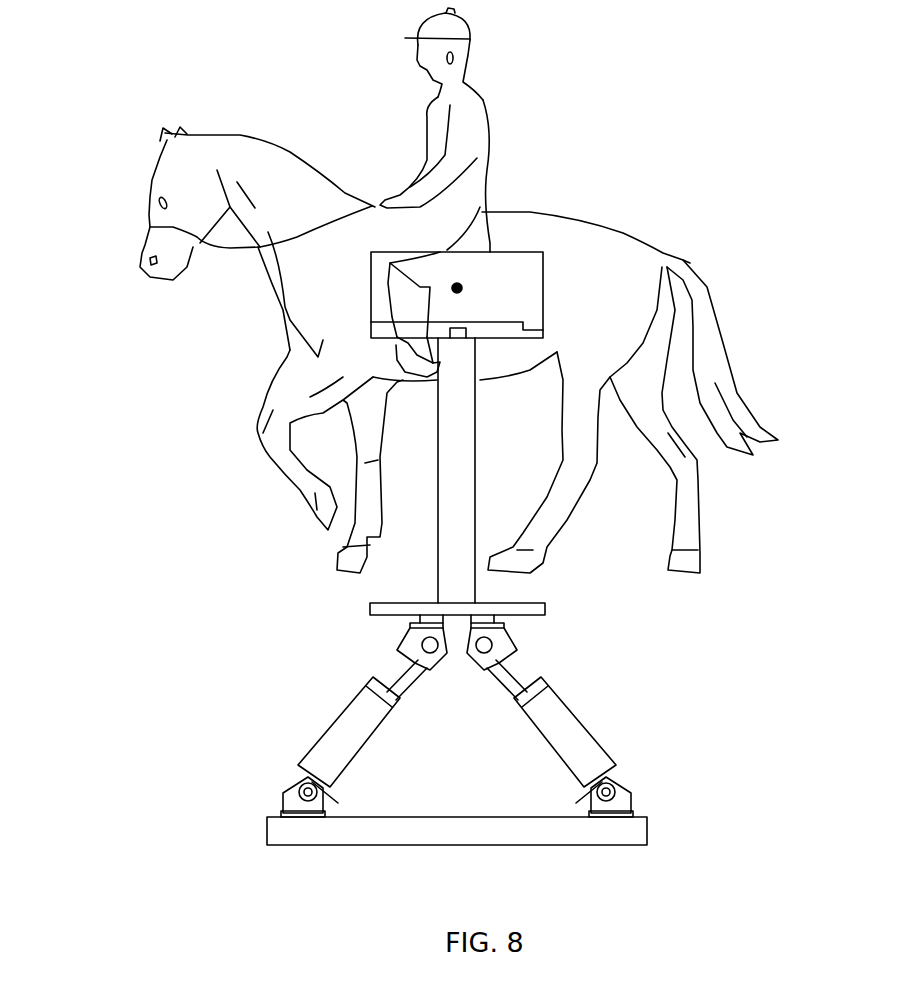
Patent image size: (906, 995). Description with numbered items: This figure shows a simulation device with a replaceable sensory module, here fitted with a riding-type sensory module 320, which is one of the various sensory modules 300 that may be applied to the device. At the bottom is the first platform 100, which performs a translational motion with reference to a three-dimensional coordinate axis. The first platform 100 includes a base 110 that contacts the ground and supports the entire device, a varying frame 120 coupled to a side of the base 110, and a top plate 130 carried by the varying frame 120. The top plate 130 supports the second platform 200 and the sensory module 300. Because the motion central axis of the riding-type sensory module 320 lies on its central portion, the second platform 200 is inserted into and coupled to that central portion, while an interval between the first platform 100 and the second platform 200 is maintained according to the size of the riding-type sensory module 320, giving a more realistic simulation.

The first platform 100 is at (177, 603).
The base 110 is at (267, 830).
The varying frame 120 is at (340, 716).
The top plate 130 is at (370, 606).
The second platform 200 is at (527, 252).
The sensory module 300 is at (459, 350).
The riding-type sensory module 320 is at (625, 232).